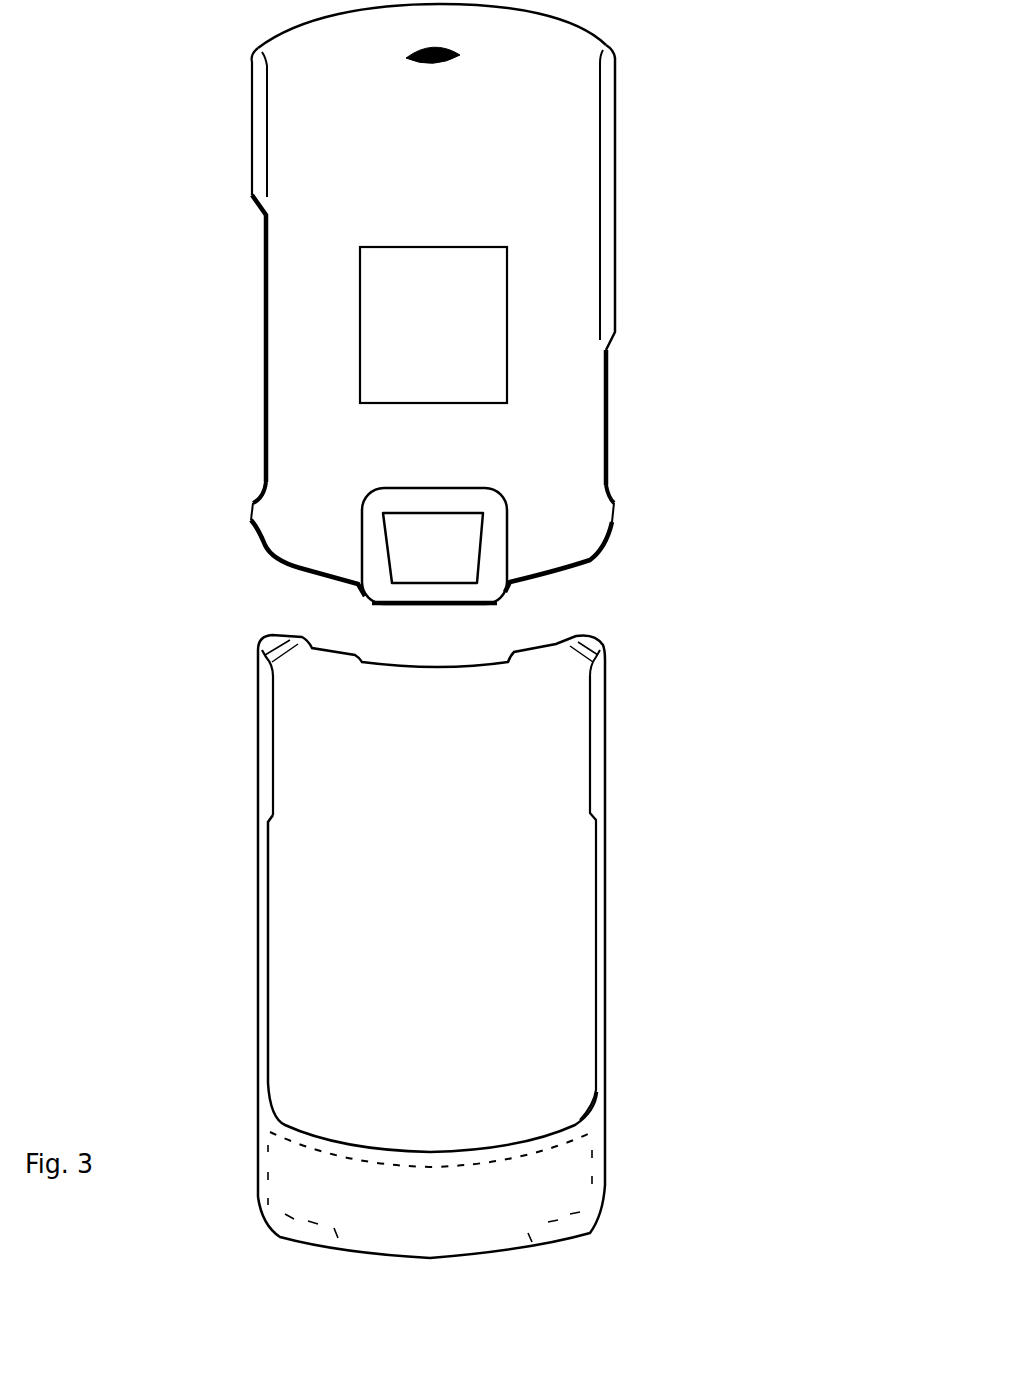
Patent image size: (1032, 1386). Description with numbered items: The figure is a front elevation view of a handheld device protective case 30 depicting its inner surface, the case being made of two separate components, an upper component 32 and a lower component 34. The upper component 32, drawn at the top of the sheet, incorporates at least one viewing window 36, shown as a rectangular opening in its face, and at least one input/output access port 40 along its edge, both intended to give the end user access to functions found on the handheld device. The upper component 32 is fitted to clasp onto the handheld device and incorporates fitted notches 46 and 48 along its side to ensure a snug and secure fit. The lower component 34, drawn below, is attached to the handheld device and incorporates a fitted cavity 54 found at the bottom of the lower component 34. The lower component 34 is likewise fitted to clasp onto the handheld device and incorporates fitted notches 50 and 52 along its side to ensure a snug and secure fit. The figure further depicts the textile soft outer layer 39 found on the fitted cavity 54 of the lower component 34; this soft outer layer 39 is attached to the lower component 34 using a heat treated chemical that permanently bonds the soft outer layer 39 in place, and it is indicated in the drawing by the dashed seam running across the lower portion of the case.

The protective case 30 is at (866, 277).
The upper component 32 is at (552, 116).
The lower component 34 is at (515, 718).
The viewing window 36 is at (480, 367).
The soft outer layer 39 is at (584, 1147).
The input/output access port 40 is at (612, 424).
The fitted notch 46 is at (596, 278).
The fitted notch 48 is at (614, 515).
The fitted notch 50 is at (284, 716).
The fitted notch 52 is at (287, 973).
The fitted cavity 54 is at (442, 1197).